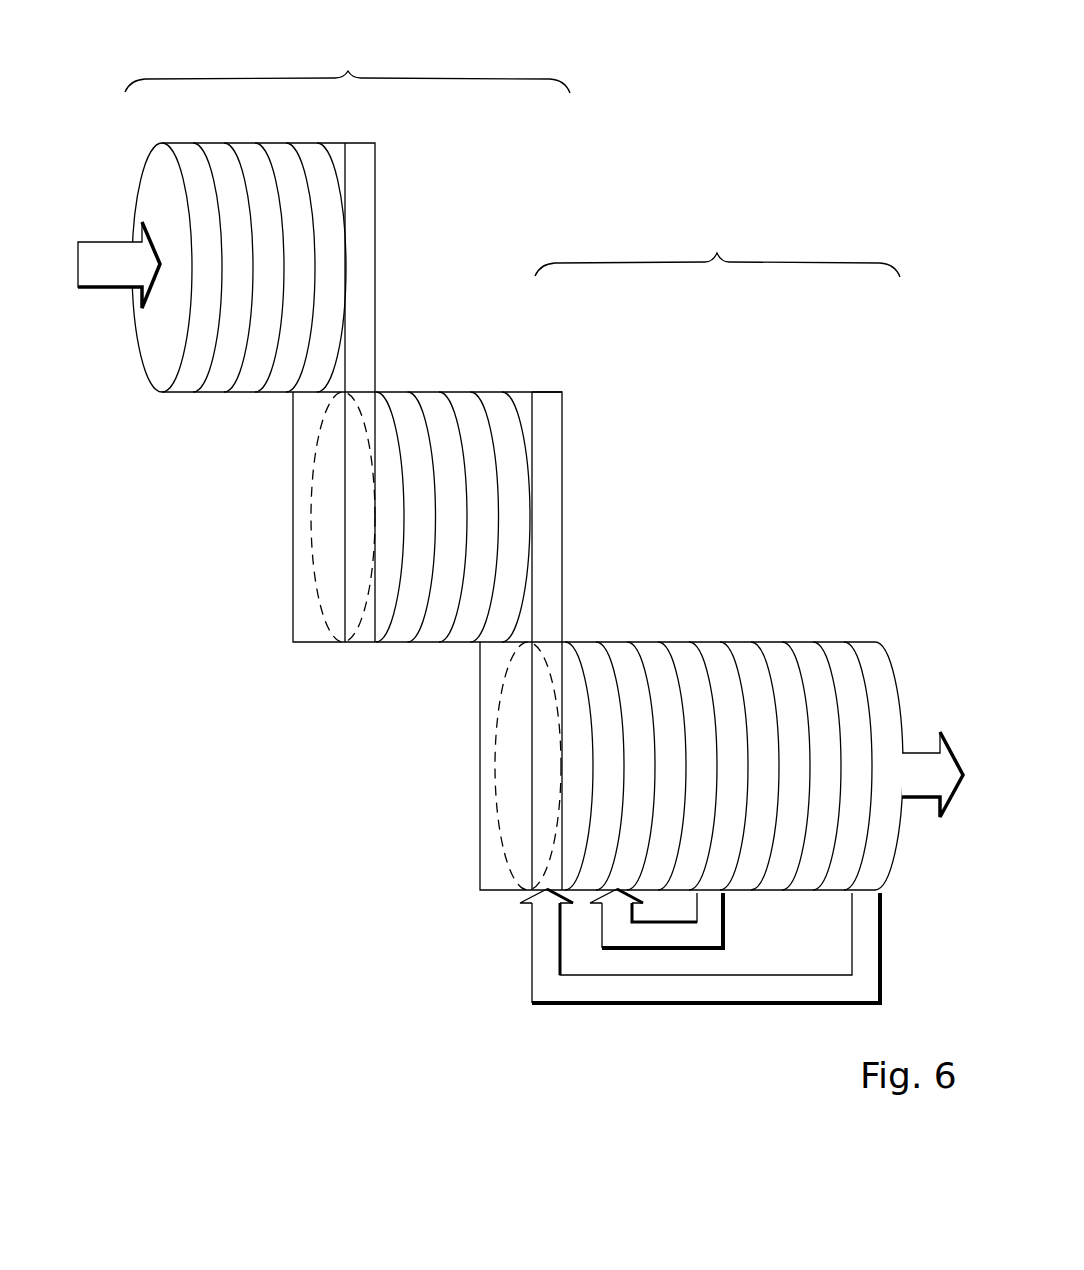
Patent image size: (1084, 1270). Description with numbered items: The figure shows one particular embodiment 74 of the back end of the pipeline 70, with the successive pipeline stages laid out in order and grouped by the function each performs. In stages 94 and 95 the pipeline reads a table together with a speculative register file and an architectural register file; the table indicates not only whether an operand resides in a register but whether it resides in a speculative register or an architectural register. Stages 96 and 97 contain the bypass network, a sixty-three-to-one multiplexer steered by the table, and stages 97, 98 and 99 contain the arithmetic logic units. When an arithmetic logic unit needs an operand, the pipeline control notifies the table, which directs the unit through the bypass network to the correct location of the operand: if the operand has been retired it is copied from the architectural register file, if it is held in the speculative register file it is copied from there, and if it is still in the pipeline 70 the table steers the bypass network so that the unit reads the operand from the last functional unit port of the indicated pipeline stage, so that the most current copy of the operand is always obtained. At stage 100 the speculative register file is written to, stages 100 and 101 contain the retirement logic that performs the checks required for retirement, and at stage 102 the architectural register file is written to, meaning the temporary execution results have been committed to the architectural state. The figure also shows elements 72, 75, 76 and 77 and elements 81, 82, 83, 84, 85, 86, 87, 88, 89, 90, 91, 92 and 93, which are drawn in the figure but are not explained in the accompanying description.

The pipeline 70 is at (718, 58).
The first filter section 72 is at (347, 69).
The back end embodiment 74 is at (717, 250).
The plate 75 is at (562, 473).
The recirculation loop 76 is at (670, 948).
The recirculation loop 77 is at (700, 1005).
The filter disk 81 is at (160, 143).
The filter disk 82 is at (207, 143).
The filter disk 83 is at (253, 143).
The filter disk 84 is at (265, 143).
The filter disk 85 is at (312, 143).
The plate 86 is at (378, 204).
The filter disk 87 is at (362, 392).
The filter disk 88 is at (390, 392).
The filter disk 89 is at (425, 392).
The filter disk 90 is at (455, 392).
The filter disk 91 is at (490, 392).
The filter disk 92 is at (547, 640).
The filter disk 93 is at (577, 641).
The stage 94 is at (612, 641).
The stage 95 is at (640, 641).
The stage 96 is at (678, 641).
The stage 97 is at (708, 893).
The stage 98 is at (738, 893).
The stage 99 is at (767, 893).
The stage 100 is at (797, 641).
The stage 101 is at (832, 641).
The stage 102 is at (863, 641).